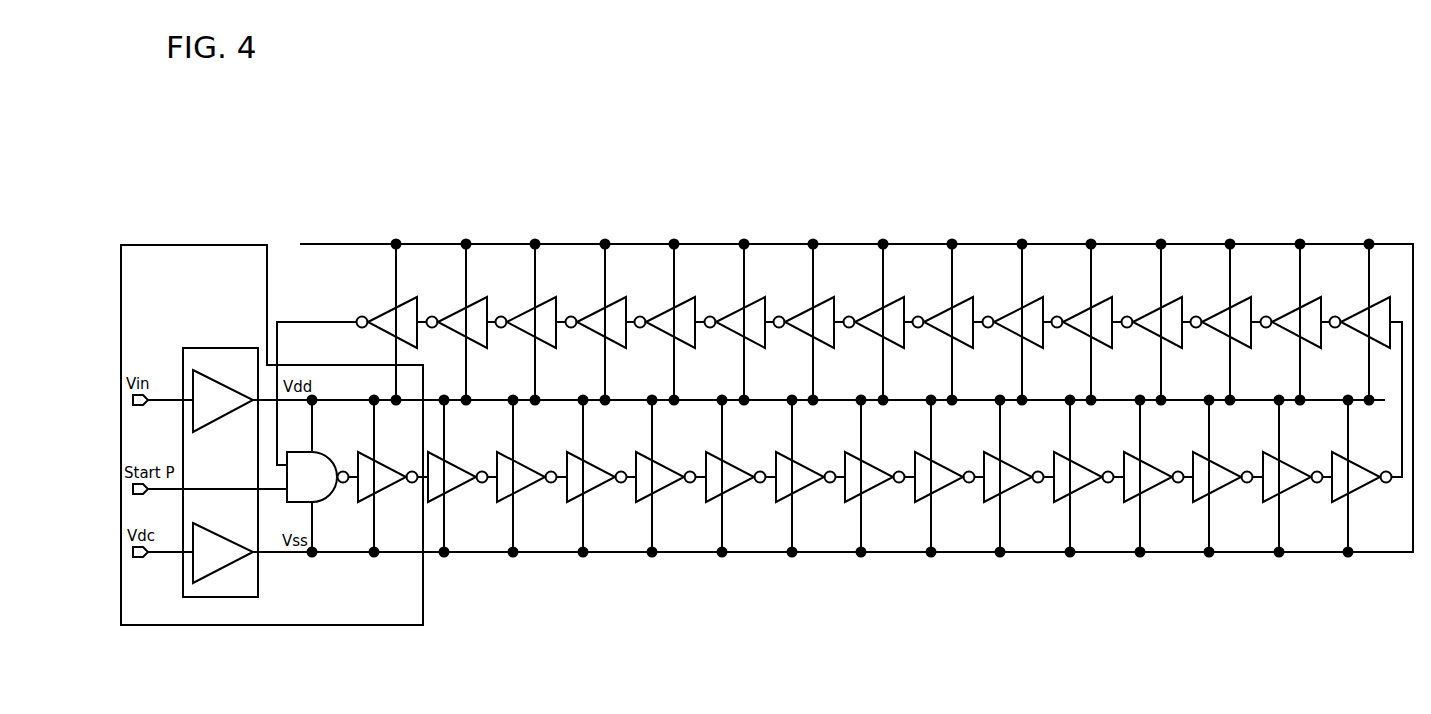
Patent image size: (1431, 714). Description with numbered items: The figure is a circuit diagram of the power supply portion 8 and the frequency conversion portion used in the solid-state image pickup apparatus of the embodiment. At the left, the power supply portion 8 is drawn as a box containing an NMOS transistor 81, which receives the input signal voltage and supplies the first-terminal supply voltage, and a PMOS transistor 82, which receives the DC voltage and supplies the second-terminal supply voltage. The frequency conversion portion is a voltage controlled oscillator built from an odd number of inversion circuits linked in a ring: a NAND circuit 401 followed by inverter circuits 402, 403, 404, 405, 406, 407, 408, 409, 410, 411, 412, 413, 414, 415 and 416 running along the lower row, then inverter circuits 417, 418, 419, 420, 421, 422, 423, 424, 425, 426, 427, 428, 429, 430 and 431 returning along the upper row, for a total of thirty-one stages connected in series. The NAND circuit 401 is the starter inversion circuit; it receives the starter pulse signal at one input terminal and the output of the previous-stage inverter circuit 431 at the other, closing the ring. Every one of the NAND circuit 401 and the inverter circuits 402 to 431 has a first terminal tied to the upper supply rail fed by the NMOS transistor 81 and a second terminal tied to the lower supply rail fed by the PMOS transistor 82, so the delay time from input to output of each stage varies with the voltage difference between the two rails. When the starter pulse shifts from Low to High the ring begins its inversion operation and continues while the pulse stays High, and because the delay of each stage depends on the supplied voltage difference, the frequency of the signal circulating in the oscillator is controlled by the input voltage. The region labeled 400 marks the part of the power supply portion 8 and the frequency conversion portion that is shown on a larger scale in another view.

The portion of the power supply portion and the frequency conversion portion 400 is at (153, 626).
The power supply portion 8 is at (197, 598).
The NMOS transistor 81 is at (216, 380).
The PMOS transistor 82 is at (221, 570).
The NAND circuit 401 is at (328, 503).
The inverter circuit 402 is at (390, 490).
The inverter circuit 403 is at (454, 486).
The inverter circuit 404 is at (523, 486).
The inverter circuit 405 is at (593, 486).
The inverter circuit 406 is at (662, 486).
The inverter circuit 407 is at (732, 486).
The inverter circuit 408 is at (802, 486).
The inverter circuit 409 is at (871, 486).
The inverter circuit 410 is at (941, 486).
The inverter circuit 411 is at (1010, 486).
The inverter circuit 412 is at (1080, 486).
The inverter circuit 413 is at (1150, 486).
The inverter circuit 414 is at (1219, 486).
The inverter circuit 415 is at (1289, 486).
The inverter circuit 416 is at (1358, 486).
The inverter circuit 417 is at (1359, 308).
The inverter circuit 418 is at (1290, 308).
The inverter circuit 419 is at (1220, 308).
The inverter circuit 420 is at (1151, 308).
The inverter circuit 421 is at (1081, 308).
The inverter circuit 422 is at (1012, 308).
The inverter circuit 423 is at (942, 308).
The inverter circuit 424 is at (873, 308).
The inverter circuit 425 is at (803, 308).
The inverter circuit 426 is at (734, 308).
The inverter circuit 427 is at (664, 308).
The inverter circuit 428 is at (595, 308).
The inverter circuit 429 is at (525, 308).
The inverter circuit 430 is at (456, 308).
The inverter circuit 431 is at (386, 308).